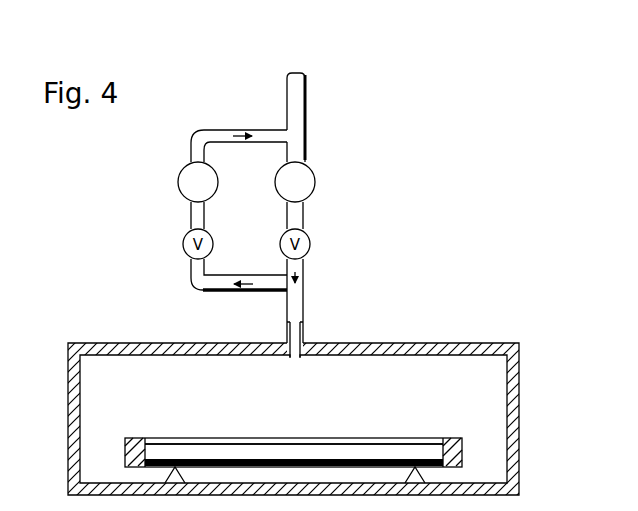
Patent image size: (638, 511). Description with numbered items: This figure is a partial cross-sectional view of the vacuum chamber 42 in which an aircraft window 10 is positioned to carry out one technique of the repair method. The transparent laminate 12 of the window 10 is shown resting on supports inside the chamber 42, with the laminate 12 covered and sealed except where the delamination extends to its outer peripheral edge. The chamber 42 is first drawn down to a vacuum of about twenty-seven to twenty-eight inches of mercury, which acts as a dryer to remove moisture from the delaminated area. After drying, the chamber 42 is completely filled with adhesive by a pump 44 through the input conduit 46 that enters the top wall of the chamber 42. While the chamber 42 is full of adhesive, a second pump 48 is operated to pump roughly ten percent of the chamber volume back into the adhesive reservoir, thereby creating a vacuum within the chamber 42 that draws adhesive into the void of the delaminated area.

The aircraft window 10 is at (333, 430).
The transparent laminate 12 is at (222, 437).
The vacuum chamber 42 is at (512, 400).
The pump 44 is at (315, 178).
The input conduit 46 is at (296, 307).
The pump 48 is at (178, 176).